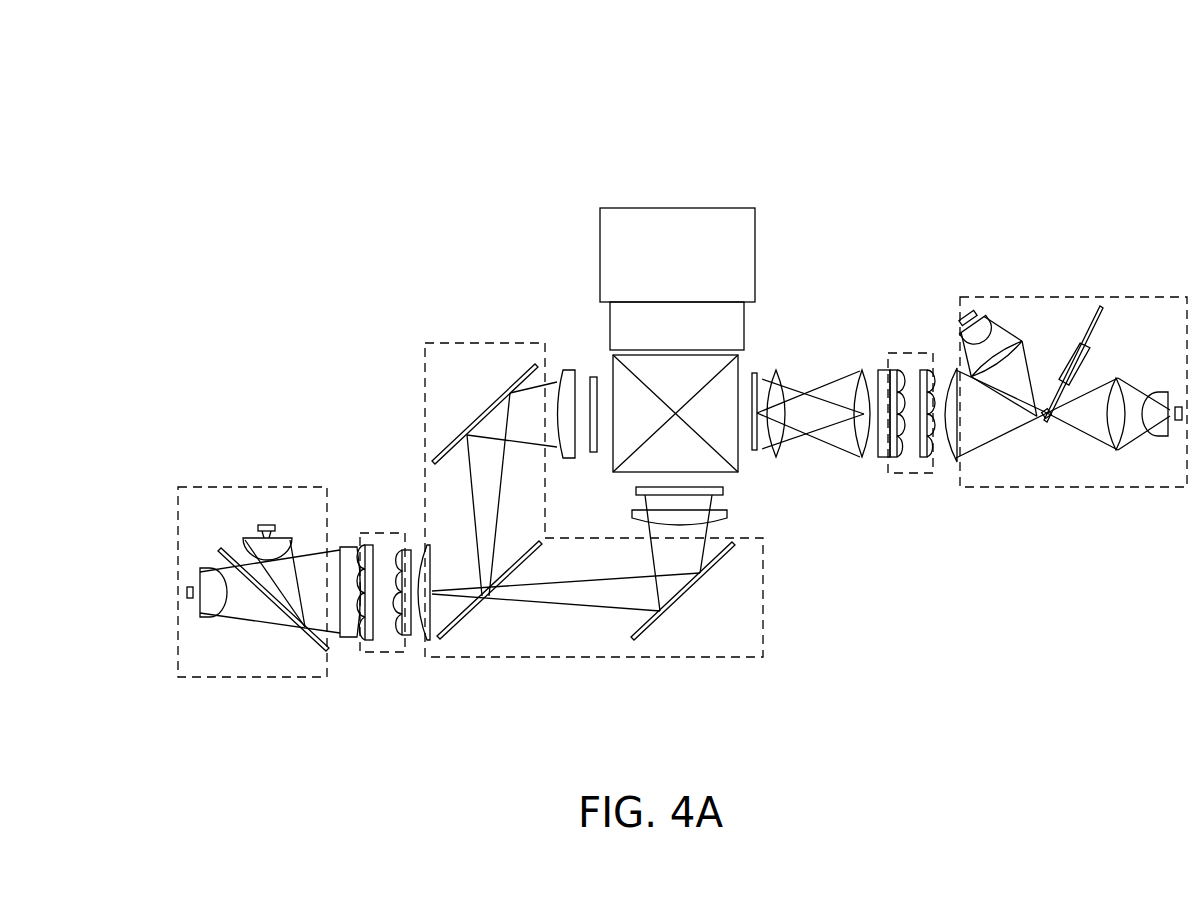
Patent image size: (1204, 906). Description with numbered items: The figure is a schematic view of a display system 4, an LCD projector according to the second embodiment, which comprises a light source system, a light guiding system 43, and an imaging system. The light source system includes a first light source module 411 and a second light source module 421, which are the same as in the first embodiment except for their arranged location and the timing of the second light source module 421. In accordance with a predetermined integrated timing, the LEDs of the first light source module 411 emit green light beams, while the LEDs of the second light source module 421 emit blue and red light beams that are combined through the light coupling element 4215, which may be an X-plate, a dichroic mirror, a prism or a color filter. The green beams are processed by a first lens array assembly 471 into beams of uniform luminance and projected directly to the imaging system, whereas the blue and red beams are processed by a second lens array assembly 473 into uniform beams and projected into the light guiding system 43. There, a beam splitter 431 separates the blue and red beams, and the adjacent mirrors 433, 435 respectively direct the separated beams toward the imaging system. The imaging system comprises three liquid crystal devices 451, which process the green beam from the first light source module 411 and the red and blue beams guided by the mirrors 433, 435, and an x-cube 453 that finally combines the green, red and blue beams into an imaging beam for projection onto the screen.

The display system 4 is at (828, 137).
The first light source module 411 is at (1025, 297).
The second light source module 421 is at (259, 605).
The light coupling element 4215 is at (224, 553).
The beam splitter 431 is at (470, 607).
The mirror 433 is at (476, 418).
The mirror 435 is at (670, 604).
The light guiding system 43 is at (617, 500).
The liquid crystal device 451 is at (595, 375).
The x-cube 453 is at (697, 376).
The first lens array assembly 471 is at (912, 353).
The second lens array assembly 473 is at (400, 653).